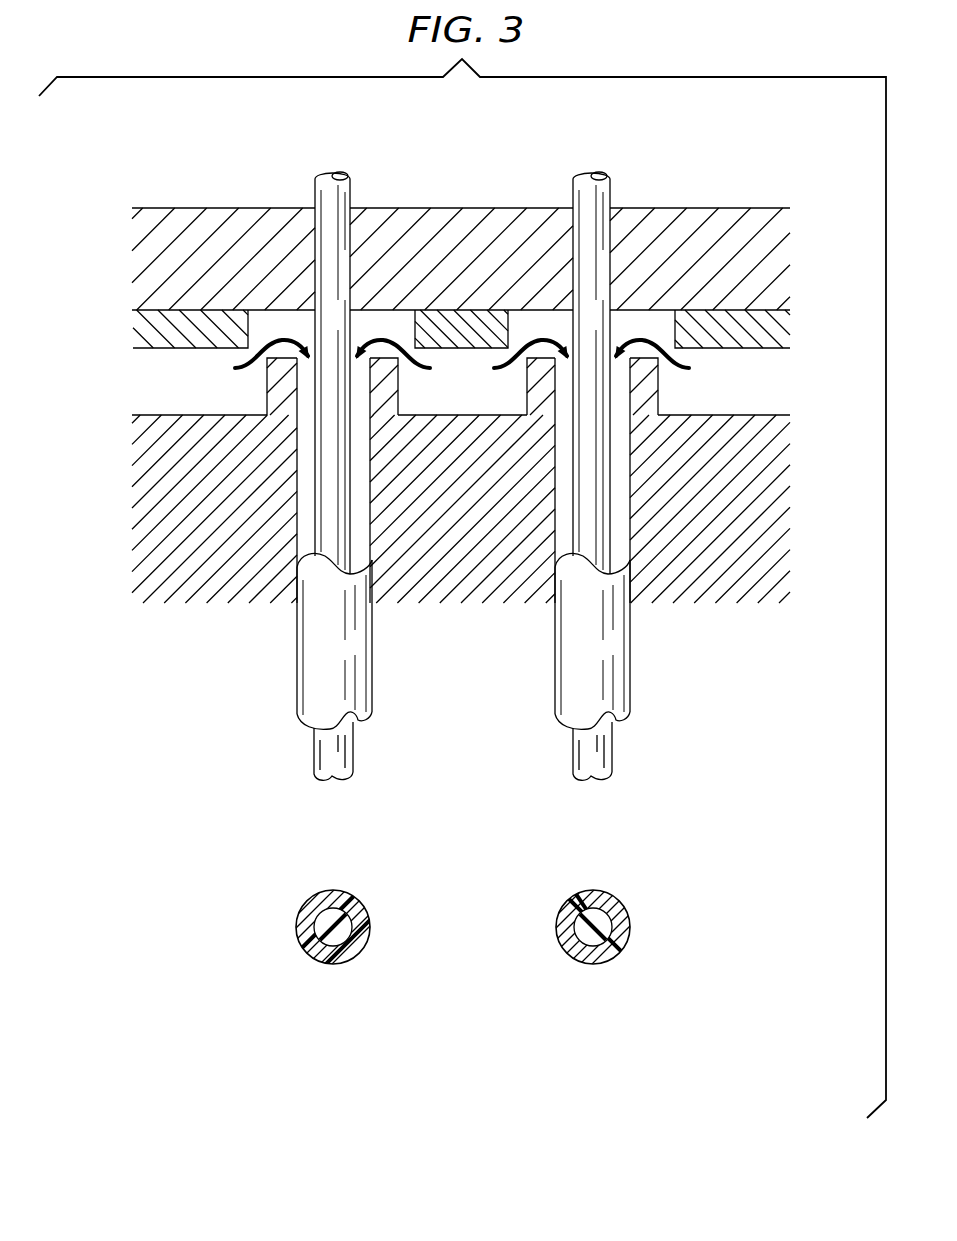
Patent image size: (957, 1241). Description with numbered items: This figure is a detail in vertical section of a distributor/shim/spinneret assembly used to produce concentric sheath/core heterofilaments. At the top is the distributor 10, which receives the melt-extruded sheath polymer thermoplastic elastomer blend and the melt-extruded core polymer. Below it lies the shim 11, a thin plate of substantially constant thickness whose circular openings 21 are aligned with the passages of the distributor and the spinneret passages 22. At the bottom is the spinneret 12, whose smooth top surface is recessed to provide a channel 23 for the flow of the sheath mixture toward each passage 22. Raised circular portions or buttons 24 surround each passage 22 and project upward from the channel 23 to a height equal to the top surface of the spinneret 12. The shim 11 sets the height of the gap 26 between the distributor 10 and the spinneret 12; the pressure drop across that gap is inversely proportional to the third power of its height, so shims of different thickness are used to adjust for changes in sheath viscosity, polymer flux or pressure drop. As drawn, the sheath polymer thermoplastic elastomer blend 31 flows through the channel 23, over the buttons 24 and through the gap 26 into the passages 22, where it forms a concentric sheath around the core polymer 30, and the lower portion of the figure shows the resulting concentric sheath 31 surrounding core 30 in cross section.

The distributor 10 is at (647, 307).
The shim 11 is at (143, 320).
The spinneret 12 is at (773, 415).
The circular openings 21 is at (398, 323).
The spinneret passages 22 is at (302, 535).
The channel 23 is at (478, 404).
The raised circular portions or buttons 24 is at (267, 379).
The gap 26 is at (680, 358).
The core polymer 30 is at (347, 188).
The sheath polymer thermoplastic elastomer blend 31 is at (372, 660).